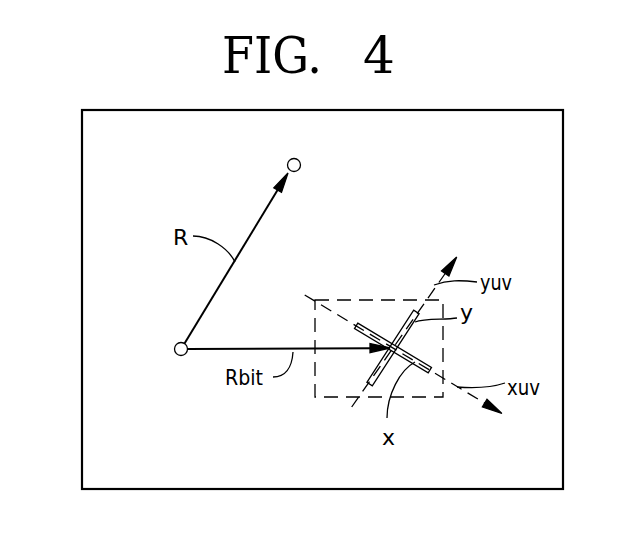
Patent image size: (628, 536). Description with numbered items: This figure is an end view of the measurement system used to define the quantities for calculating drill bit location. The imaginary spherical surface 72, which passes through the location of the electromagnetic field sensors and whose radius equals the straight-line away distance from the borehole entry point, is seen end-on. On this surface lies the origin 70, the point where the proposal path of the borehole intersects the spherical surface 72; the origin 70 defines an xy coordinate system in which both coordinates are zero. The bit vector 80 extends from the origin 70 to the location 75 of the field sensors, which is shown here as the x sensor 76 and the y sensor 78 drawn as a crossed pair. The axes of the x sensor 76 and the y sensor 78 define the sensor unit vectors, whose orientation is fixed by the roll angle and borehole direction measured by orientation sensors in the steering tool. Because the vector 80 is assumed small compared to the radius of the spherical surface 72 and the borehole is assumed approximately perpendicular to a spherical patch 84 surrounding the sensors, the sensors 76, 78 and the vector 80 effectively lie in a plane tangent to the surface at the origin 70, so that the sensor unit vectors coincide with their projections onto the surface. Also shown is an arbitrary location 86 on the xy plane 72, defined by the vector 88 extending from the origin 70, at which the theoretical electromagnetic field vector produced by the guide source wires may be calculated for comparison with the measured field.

The origin 70 is at (174, 347).
The spherical surface 72 is at (563, 188).
The location of the x and y field sensors 75 is at (400, 345).
The x sensor 76 is at (425, 361).
The y sensor 78 is at (400, 323).
The vector Rbit 80 is at (282, 347).
The spherical patch 84 is at (332, 300).
The arbitrary location 86 is at (301, 165).
The vector R 88 is at (246, 235).